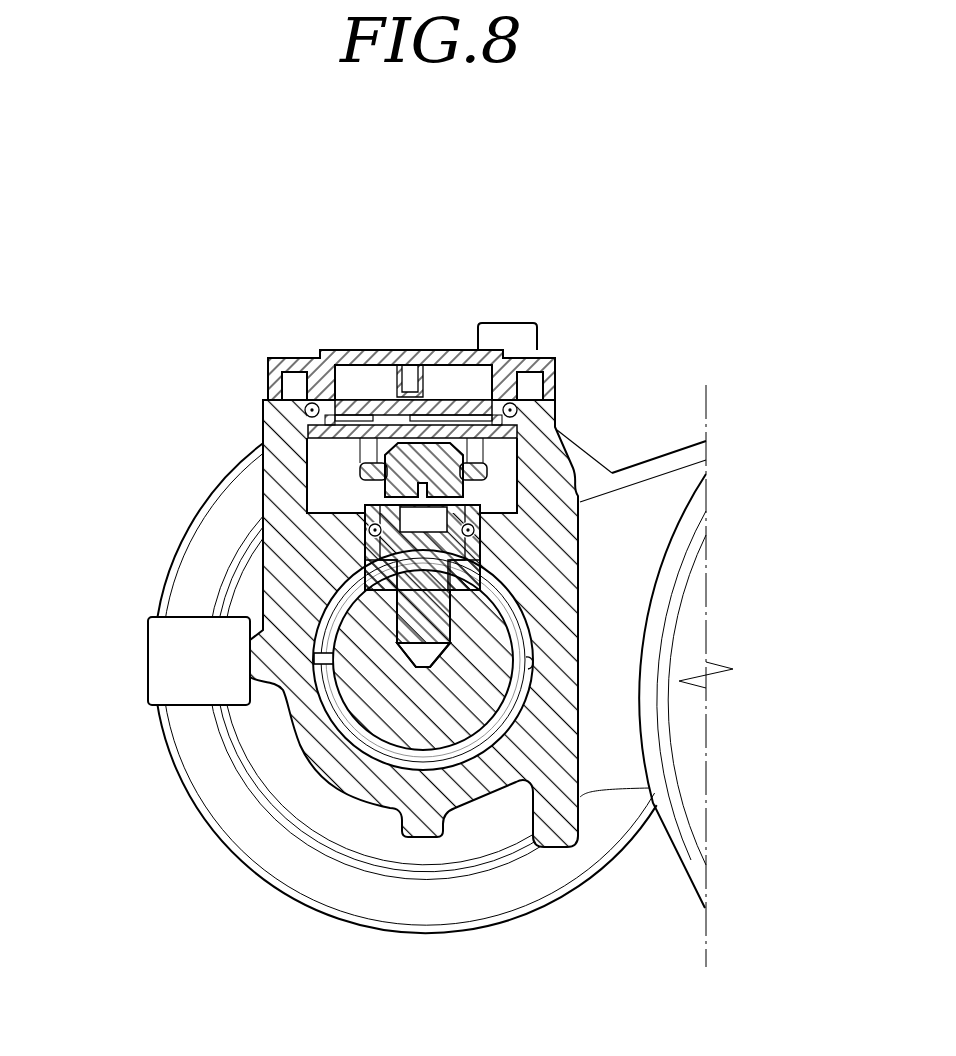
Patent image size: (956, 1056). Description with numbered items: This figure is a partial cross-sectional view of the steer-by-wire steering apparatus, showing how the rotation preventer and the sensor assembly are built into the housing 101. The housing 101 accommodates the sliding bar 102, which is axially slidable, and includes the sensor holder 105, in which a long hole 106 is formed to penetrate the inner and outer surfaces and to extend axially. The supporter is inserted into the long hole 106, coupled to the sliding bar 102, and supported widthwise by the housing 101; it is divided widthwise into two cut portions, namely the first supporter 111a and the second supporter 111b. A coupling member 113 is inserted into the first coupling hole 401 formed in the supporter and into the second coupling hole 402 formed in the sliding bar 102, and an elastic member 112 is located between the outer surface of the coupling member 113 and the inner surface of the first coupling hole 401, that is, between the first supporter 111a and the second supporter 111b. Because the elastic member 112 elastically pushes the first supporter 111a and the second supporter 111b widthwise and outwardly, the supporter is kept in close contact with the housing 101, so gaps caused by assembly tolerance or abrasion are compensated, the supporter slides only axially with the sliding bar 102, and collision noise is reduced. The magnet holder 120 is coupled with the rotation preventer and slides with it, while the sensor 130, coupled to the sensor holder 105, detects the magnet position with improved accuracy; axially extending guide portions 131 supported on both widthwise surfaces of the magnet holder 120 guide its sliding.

The housing 101 is at (665, 497).
The sliding bar 102 is at (383, 718).
The sensor holder 105 is at (558, 415).
The long hole 106 is at (483, 533).
The first supporter 111a is at (483, 565).
The second supporter 111b is at (367, 562).
The elastic member 112 is at (373, 530).
The coupling member 113 is at (420, 620).
The magnet holder 120 is at (423, 458).
The sensor 130 is at (558, 365).
The guide portion 131 is at (360, 487).
The first coupling hole 401 is at (445, 622).
The second coupling hole 402 is at (430, 585).